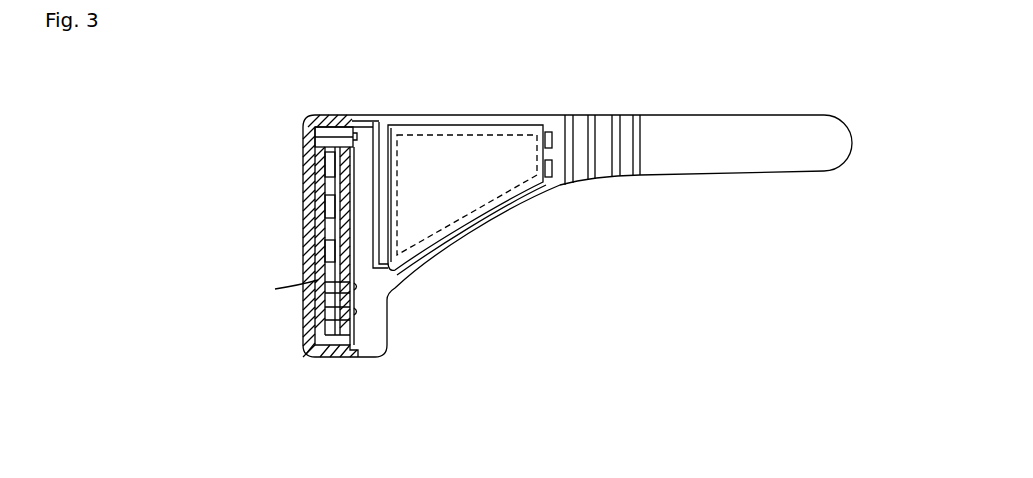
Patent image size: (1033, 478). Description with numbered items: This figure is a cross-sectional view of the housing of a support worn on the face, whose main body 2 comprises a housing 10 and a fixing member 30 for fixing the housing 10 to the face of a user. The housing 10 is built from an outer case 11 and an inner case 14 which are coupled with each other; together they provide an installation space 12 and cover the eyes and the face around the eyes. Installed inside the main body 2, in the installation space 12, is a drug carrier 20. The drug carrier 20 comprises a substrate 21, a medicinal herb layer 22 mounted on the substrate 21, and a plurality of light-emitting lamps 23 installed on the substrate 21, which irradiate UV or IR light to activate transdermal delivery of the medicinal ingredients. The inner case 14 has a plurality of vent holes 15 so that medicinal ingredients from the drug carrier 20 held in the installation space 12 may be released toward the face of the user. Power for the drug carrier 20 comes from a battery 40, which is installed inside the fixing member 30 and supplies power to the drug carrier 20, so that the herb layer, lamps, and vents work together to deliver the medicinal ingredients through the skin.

The main body 2 is at (188, 325).
The housing 10 is at (289, 243).
The outer case 11 is at (315, 318).
The installation space 12 is at (346, 133).
The inner case 14 is at (315, 340).
The vent holes 15 is at (355, 173).
The drug carrier 20 is at (278, 241).
The substrate 21 is at (325, 165).
The medicinal herb layer 22 is at (325, 190).
The light-emitting lamps 23 is at (325, 215).
The fixing member 30 is at (562, 178).
The battery 40 is at (462, 145).